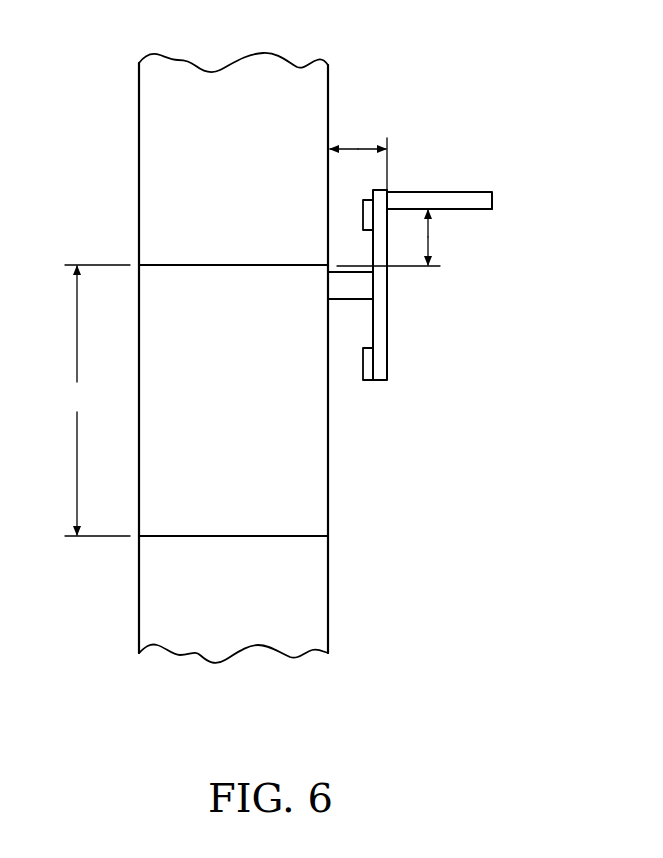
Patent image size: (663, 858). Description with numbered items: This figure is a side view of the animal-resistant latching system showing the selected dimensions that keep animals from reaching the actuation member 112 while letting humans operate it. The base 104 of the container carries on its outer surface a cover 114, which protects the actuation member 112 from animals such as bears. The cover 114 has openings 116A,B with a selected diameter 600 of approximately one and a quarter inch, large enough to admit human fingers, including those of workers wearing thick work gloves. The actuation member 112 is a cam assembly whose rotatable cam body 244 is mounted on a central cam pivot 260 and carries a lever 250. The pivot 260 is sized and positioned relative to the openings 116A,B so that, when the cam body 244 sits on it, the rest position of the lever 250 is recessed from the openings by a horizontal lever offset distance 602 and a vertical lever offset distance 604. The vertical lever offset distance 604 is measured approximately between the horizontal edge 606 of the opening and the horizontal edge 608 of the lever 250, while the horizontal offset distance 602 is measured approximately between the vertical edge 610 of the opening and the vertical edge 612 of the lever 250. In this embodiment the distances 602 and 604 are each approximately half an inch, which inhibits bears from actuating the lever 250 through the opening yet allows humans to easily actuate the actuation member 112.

The base 104 is at (139, 129).
The cover 114 is at (262, 165).
The openings 116A,B is at (258, 418).
The horizontal edge of the opening 606 is at (237, 265).
The vertical edge of the opening 610 is at (329, 503).
The diameter 600 is at (94, 400).
The horizontal lever offset distance 602 is at (361, 148).
The vertical lever offset distance 604 is at (431, 237).
The lever 250 is at (475, 197).
The vertical edge of the lever 612 is at (392, 198).
The horizontal edge of the lever 608 is at (478, 212).
The cam body 244 is at (380, 283).
The central cam pivot 260 is at (348, 292).
The actuation member 112 is at (400, 382).